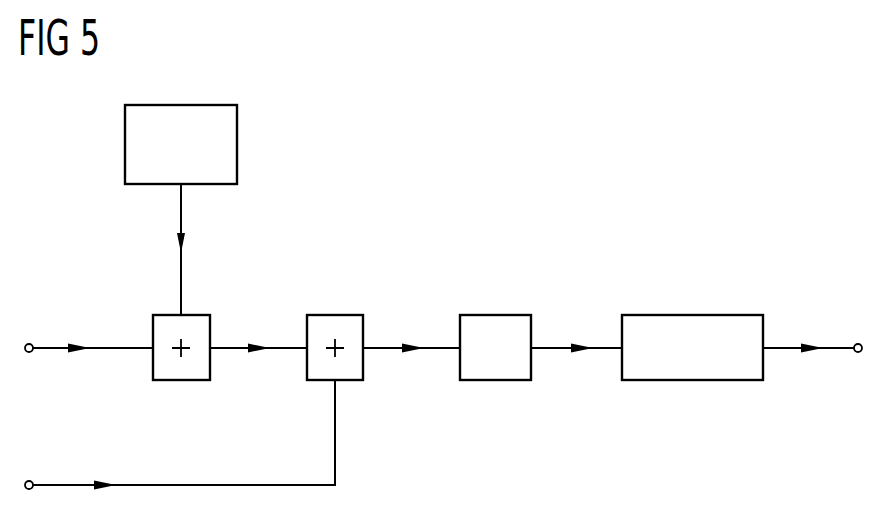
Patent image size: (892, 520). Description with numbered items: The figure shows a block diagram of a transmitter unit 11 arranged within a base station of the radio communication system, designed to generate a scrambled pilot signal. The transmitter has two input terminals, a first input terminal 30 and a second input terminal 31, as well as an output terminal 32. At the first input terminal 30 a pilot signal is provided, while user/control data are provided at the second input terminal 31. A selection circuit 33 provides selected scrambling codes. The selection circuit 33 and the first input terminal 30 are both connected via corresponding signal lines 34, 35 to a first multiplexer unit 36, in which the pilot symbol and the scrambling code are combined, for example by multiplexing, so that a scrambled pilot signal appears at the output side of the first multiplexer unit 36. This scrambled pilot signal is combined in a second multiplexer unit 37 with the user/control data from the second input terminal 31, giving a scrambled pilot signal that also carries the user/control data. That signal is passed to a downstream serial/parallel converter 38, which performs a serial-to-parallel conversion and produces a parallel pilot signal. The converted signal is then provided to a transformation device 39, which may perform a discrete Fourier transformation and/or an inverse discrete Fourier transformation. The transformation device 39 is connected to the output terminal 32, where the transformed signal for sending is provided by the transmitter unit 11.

The transmitter unit 11 is at (803, 199).
The first input terminal 30 is at (29, 344).
The second input terminal 31 is at (29, 481).
The output terminal 32 is at (858, 344).
The selection circuit 33 is at (240, 147).
The signal line 34 is at (183, 212).
The signal line 35 is at (117, 347).
The first multiplexer unit 36 is at (181, 381).
The second multiplexer unit 37 is at (333, 314).
The serial/parallel converter 38 is at (488, 314).
The transformation device 39 is at (689, 314).